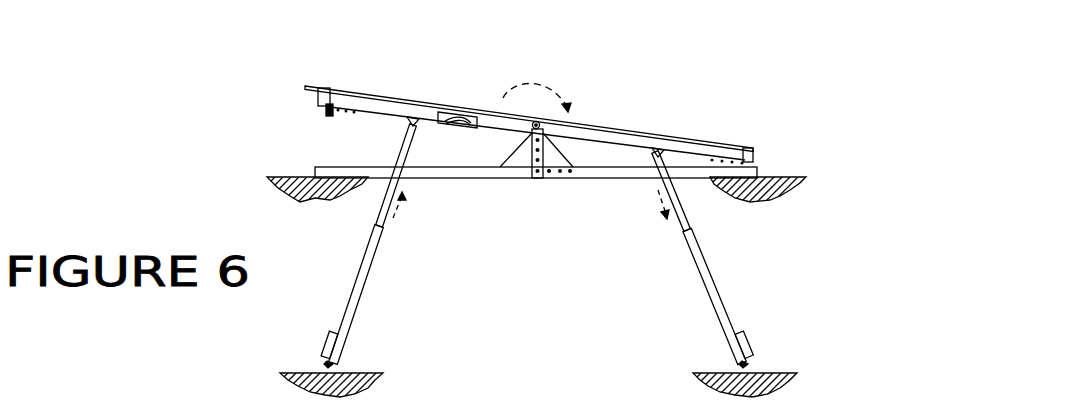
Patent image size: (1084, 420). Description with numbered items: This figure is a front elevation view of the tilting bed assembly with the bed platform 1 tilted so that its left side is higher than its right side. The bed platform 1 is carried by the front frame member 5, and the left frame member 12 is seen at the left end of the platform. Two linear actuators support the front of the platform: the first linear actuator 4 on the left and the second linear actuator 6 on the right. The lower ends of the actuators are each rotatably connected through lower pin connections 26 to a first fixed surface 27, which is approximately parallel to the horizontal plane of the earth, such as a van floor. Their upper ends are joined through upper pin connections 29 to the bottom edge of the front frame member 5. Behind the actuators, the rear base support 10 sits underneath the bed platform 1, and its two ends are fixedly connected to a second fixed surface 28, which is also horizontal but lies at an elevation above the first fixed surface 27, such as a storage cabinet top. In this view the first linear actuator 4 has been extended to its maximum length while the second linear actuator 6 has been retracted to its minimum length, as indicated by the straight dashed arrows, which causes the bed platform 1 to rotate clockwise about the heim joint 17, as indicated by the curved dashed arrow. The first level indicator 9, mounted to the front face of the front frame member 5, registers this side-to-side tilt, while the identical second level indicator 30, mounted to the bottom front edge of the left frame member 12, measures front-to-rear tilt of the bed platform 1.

The bed platform 1 is at (619, 127).
The first linear actuator 4 is at (370, 268).
The front frame member 5 is at (489, 118).
The second linear actuator 6 is at (700, 268).
The first level indicator 9 is at (447, 112).
The rear base support 10 is at (478, 178).
The left frame member 12 is at (320, 98).
The heim joint 17 is at (540, 120).
The lower pin connections 26 is at (323, 365).
The first fixed surface 27 is at (368, 372).
The second fixed surface 28 is at (280, 175).
The upper pin connections 29 is at (417, 118).
The second level indicator 30 is at (327, 115).